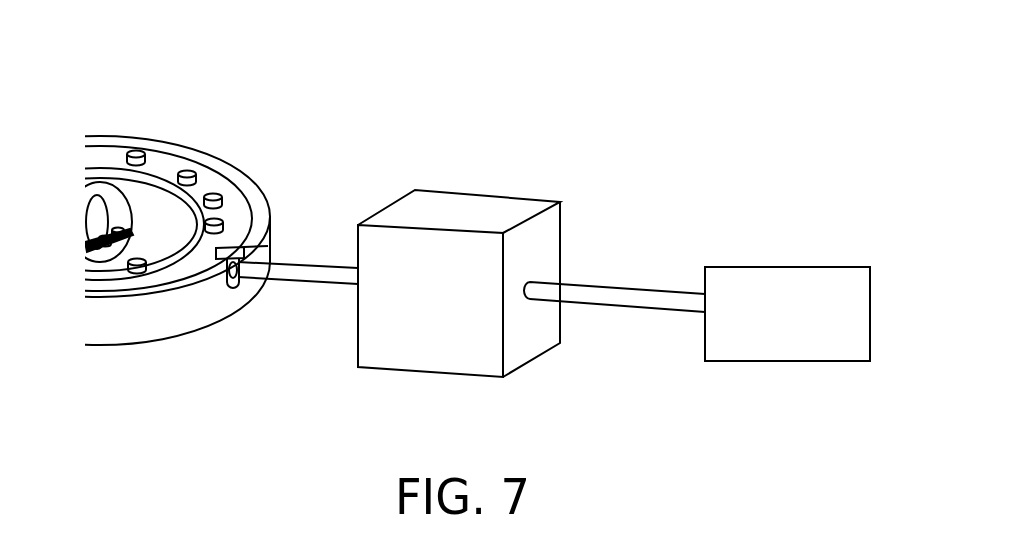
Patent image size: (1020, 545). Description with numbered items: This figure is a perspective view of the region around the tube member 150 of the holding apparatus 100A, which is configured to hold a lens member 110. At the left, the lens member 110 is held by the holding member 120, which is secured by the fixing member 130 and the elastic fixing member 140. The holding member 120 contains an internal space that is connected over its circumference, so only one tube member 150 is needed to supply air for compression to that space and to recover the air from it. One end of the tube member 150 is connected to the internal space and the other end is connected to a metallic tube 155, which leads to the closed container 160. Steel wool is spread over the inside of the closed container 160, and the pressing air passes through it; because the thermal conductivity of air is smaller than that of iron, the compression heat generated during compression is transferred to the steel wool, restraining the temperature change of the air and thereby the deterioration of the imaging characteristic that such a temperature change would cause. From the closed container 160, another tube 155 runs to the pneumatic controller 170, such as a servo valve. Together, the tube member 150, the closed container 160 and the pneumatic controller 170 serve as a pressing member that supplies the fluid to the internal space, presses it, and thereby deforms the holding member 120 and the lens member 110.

The holding apparatus 100A is at (297, 55).
The lens member 110 is at (97, 221).
The holding member 120 is at (182, 216).
The fixing member 130 is at (253, 210).
The elastic fixing member 140 is at (117, 251).
The tube member 150 is at (237, 287).
The tube 155 is at (307, 273).
The closed container 160 is at (445, 258).
The pneumatic controller 170 is at (767, 295).